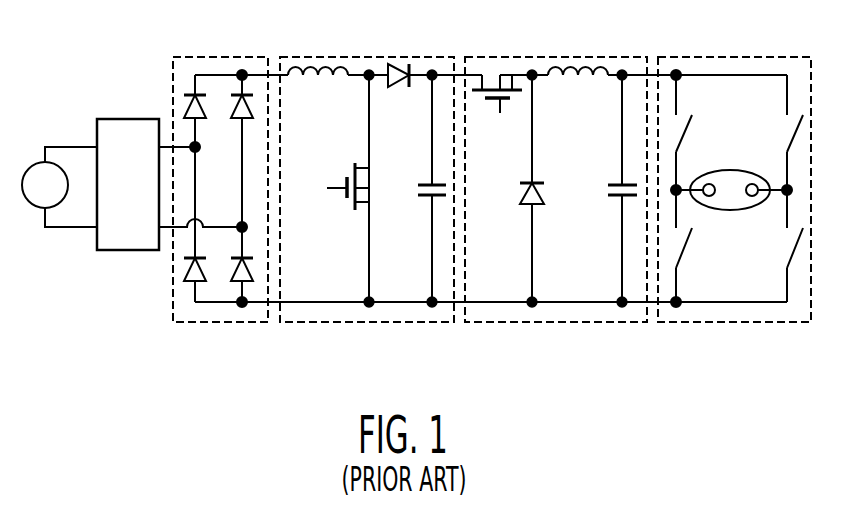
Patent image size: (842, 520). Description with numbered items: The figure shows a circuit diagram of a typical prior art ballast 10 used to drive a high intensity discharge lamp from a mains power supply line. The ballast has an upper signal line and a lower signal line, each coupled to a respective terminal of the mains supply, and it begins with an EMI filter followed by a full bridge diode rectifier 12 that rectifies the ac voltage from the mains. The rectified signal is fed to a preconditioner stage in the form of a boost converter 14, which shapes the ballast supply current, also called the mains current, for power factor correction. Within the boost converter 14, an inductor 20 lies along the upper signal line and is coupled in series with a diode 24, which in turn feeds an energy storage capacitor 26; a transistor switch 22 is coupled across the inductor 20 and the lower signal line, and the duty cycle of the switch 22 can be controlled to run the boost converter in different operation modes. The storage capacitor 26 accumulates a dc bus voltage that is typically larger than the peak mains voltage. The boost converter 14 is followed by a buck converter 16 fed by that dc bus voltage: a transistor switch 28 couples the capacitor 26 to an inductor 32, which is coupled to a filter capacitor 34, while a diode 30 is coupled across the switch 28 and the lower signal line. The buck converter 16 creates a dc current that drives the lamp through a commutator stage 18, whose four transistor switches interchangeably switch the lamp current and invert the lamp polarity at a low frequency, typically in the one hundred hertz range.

The ballast 10 is at (82, 65).
The full bridge diode rectifier 12 is at (186, 318).
The boost converter 14 is at (345, 318).
The buck converter 16 is at (552, 318).
The commutator stage 18 is at (752, 318).
The inductor 20 is at (333, 78).
The transistor switch 22 is at (337, 193).
The diode 24 is at (395, 87).
The energy storage capacitor 26 is at (418, 193).
The transistor switch 28 is at (497, 113).
The diode 30 is at (520, 200).
The inductor 32 is at (575, 78).
The filter capacitor 34 is at (608, 190).